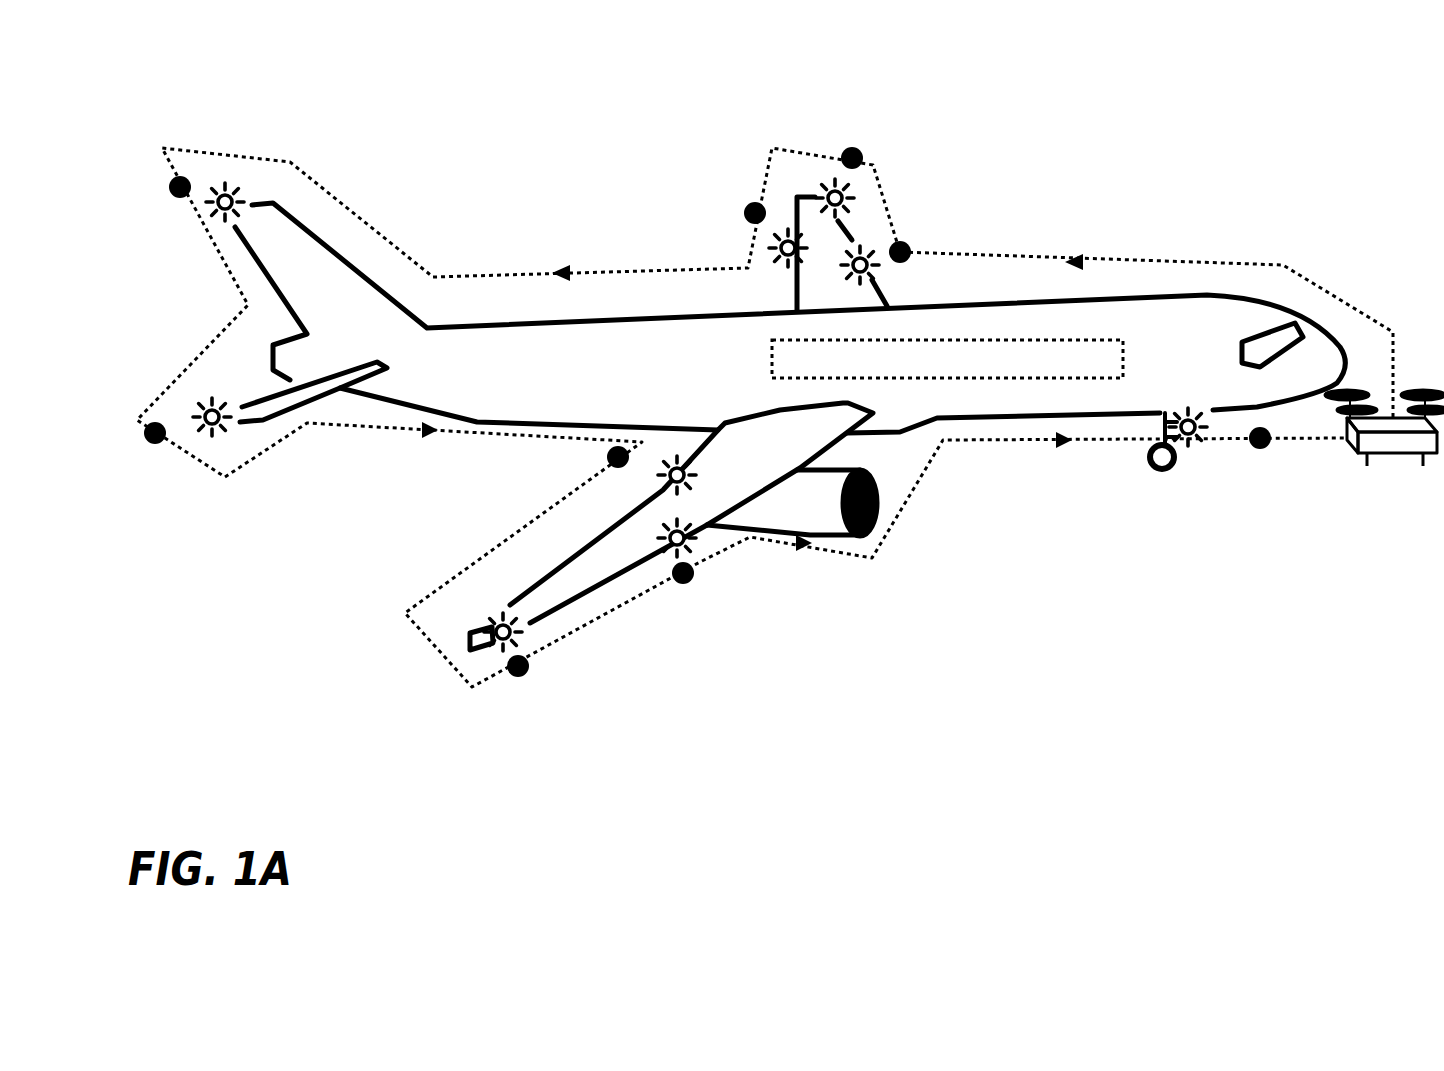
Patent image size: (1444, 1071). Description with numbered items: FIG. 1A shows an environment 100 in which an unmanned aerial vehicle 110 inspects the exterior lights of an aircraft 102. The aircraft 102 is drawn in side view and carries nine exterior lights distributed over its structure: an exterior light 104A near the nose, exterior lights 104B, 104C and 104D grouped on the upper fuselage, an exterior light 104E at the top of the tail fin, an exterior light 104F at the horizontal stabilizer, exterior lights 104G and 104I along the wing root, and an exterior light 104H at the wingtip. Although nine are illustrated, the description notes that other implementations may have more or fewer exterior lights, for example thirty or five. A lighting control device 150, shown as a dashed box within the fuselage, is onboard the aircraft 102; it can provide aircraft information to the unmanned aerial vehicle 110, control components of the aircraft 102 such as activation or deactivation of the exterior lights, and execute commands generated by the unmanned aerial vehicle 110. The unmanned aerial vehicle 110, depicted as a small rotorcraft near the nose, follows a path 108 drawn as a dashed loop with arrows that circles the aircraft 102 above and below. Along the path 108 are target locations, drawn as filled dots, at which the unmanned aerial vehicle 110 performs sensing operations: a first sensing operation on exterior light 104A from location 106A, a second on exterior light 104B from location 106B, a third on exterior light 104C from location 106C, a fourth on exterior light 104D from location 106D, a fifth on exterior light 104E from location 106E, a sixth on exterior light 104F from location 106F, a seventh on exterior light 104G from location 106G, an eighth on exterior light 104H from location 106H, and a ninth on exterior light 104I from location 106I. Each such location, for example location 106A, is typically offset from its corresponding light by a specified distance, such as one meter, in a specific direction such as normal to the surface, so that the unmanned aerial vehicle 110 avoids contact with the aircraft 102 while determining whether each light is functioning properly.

The environment 100 is at (1127, 76).
The aircraft 102 is at (1012, 420).
The exterior light 104A is at (1193, 440).
The exterior light 104B is at (873, 269).
The exterior light 104C is at (848, 197).
The exterior light 104D is at (777, 250).
The exterior light 104E is at (231, 190).
The exterior light 104F is at (209, 430).
The exterior light 104G is at (665, 478).
The exterior light 104H is at (470, 635).
The exterior light 104I is at (690, 541).
The location 106A is at (1271, 446).
The location 106B is at (912, 250).
The location 106C is at (865, 158).
The location 106D is at (744, 213).
The location 106E is at (169, 187).
The location 106F is at (145, 437).
The location 106G is at (607, 457).
The location 106H is at (529, 667).
The location 106I is at (684, 583).
The path 108 is at (1173, 262).
The unmanned aerial vehicle 110 is at (1400, 458).
The lighting control device 150 is at (947, 359).